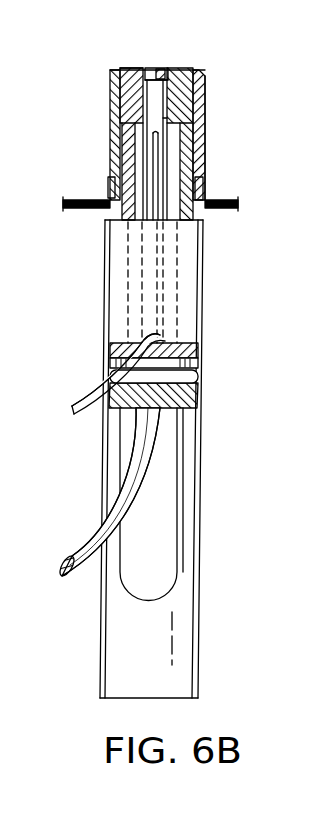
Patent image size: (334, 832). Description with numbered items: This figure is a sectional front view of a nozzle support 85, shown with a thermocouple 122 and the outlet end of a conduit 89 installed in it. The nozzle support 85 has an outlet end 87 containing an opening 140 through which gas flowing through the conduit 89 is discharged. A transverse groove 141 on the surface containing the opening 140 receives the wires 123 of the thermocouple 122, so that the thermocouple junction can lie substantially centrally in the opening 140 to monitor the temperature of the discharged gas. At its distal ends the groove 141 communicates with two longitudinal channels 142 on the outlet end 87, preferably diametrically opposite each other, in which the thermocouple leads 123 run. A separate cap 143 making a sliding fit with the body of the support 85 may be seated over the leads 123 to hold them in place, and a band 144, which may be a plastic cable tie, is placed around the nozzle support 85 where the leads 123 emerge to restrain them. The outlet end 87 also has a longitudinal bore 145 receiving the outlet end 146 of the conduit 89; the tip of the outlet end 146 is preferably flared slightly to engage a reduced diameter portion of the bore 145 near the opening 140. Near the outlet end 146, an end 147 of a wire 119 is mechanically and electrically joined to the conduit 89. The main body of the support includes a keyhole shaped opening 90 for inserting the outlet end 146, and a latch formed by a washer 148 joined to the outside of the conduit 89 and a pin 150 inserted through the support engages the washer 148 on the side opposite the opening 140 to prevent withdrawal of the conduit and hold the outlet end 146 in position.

The nozzle support 85 is at (100, 292).
The outlet end 87 is at (108, 90).
The conduit 89 is at (82, 540).
The keyhole shaped opening 90 is at (180, 556).
The wire 119 is at (80, 416).
The thermocouple 122 is at (160, 72).
The wires 123 is at (80, 210).
The opening 140 is at (143, 70).
The transverse groove 141 is at (138, 70).
The longitudinal channels 142 is at (125, 130).
The cap 143 is at (205, 168).
The band 144 is at (107, 190).
The longitudinal bore 145 is at (173, 120).
The outlet end 146 is at (160, 114).
The end 147 is at (152, 150).
The washer 148 is at (170, 337).
The pin 150 is at (198, 377).